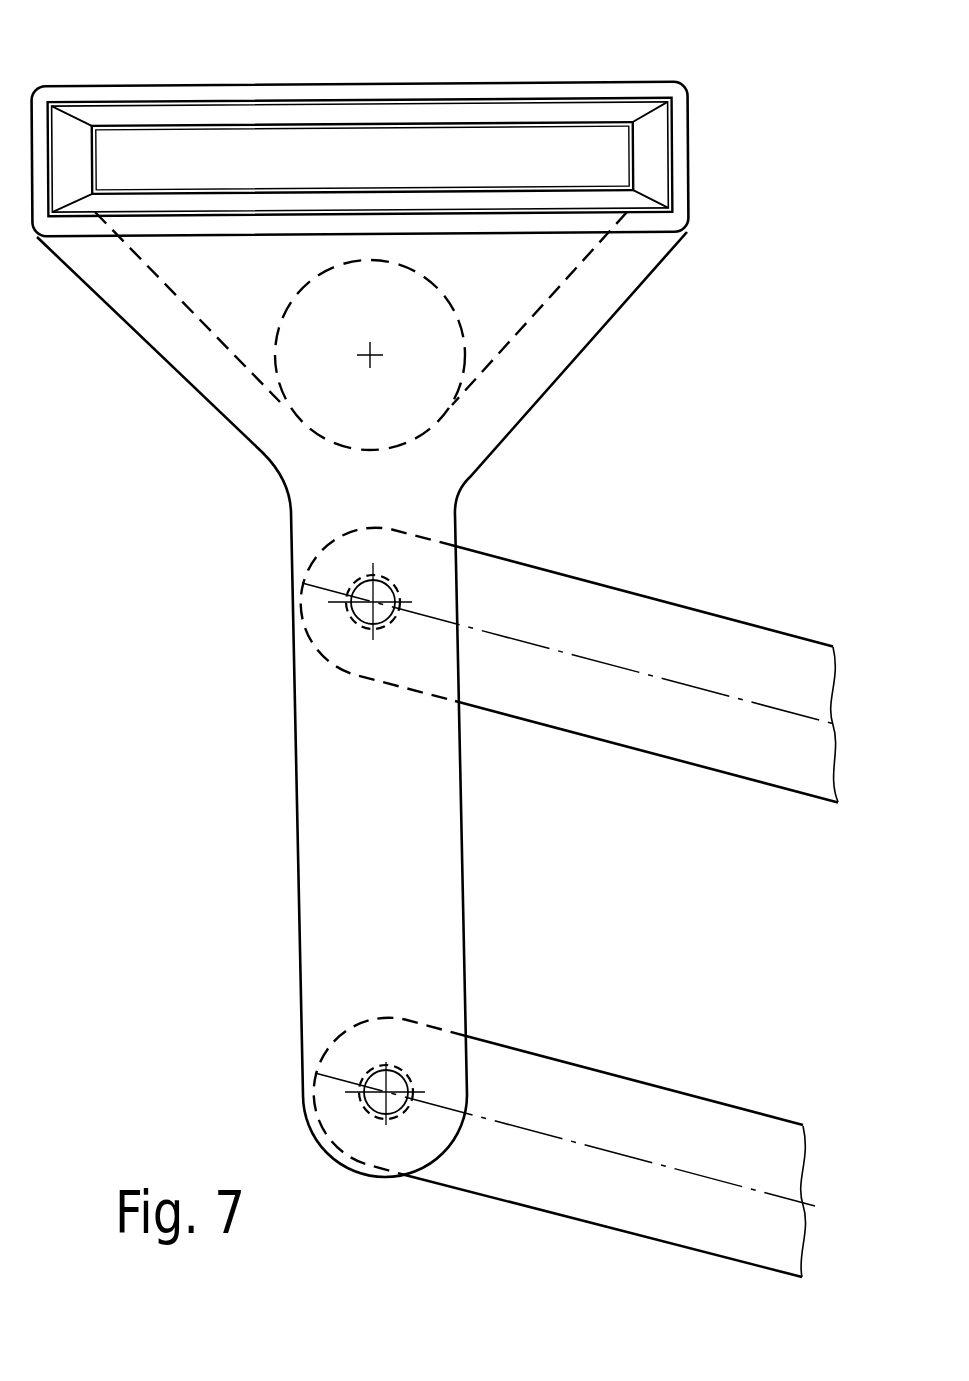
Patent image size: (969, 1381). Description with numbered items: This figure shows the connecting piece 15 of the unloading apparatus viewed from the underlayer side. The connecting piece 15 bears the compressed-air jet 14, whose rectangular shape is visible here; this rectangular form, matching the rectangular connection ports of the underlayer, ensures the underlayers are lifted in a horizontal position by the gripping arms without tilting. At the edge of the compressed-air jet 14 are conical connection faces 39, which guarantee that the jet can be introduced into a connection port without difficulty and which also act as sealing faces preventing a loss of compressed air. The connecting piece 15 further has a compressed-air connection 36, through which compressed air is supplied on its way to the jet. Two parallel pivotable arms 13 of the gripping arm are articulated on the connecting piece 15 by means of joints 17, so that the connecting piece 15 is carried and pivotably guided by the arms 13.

The pivotable arms 13 is at (693, 628).
The compressed-air jet 14 is at (286, 165).
The connecting piece 15 is at (360, 490).
The joints 17 is at (373, 605).
The compressed-air connection 36 is at (335, 383).
The conical connection faces 39 is at (532, 110).